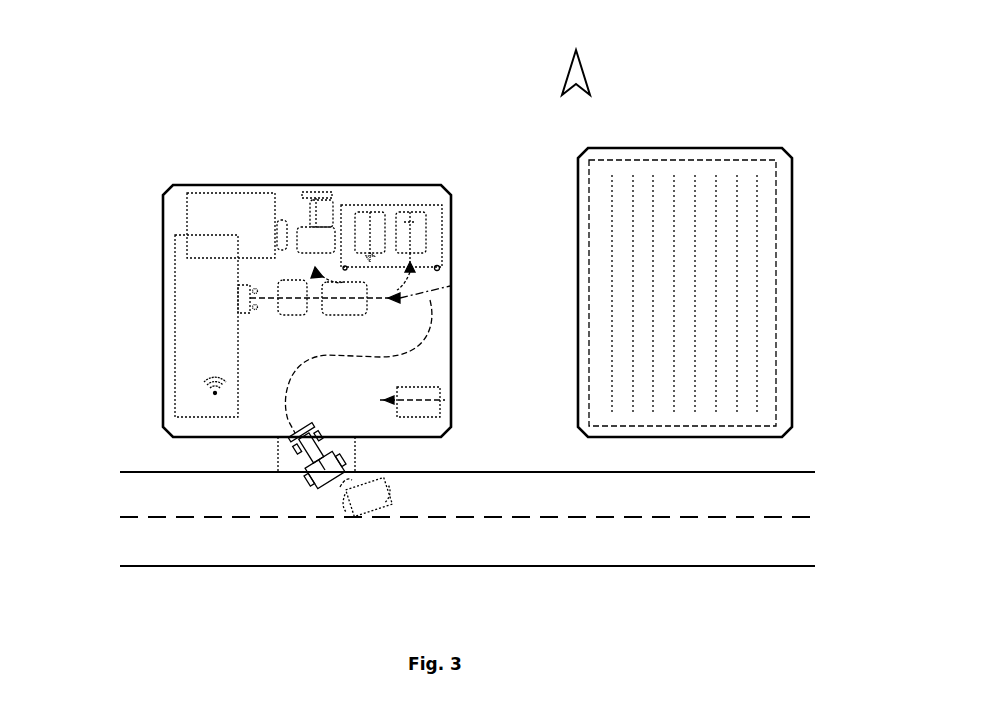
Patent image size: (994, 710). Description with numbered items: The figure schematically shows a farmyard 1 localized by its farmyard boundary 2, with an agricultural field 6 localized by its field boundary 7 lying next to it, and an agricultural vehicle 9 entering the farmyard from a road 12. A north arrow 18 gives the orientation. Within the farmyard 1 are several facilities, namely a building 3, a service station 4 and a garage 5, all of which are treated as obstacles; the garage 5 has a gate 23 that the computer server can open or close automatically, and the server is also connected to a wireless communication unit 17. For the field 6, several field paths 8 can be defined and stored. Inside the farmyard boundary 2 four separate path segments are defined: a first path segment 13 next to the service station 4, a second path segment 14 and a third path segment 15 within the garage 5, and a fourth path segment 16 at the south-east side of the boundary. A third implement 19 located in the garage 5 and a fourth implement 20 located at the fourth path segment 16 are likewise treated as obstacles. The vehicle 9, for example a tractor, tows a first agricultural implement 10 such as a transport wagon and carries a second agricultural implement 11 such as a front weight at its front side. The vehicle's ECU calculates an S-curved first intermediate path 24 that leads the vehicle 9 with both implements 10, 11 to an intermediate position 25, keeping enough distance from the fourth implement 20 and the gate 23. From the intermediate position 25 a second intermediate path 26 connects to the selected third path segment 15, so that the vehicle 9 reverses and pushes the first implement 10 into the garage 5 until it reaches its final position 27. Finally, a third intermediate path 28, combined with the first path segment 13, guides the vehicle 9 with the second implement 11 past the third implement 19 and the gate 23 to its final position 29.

The farmyard 1 is at (118, 195).
The farmyard boundary 2 is at (163, 405).
The building 3 is at (183, 328).
The service station 4 is at (235, 196).
The garage 5 is at (348, 205).
The agricultural field 6 is at (792, 298).
The field boundary 7 is at (700, 148).
The field paths 8 is at (772, 225).
The agricultural vehicle 9 is at (313, 487).
The first agricultural implement 10 is at (395, 505).
The second agricultural implement 11 is at (300, 432).
The road 12 is at (130, 547).
The first path segment 13 is at (291, 212).
The second path segment 14 is at (387, 212).
The third path segment 15 is at (410, 230).
The fourth path segment 16 is at (440, 395).
The wireless communication unit 17 is at (200, 390).
The north arrow 18 is at (588, 75).
The third implement 19 is at (363, 212).
The fourth implement 20 is at (440, 405).
The gate 23 is at (440, 268).
The first intermediate path 24 is at (432, 325).
The intermediate position 25 is at (290, 295).
The second intermediate path 26 is at (405, 292).
The final position of first implement 27 is at (417, 218).
The third intermediate path 28 is at (320, 262).
The final position of vehicle 29 is at (277, 222).